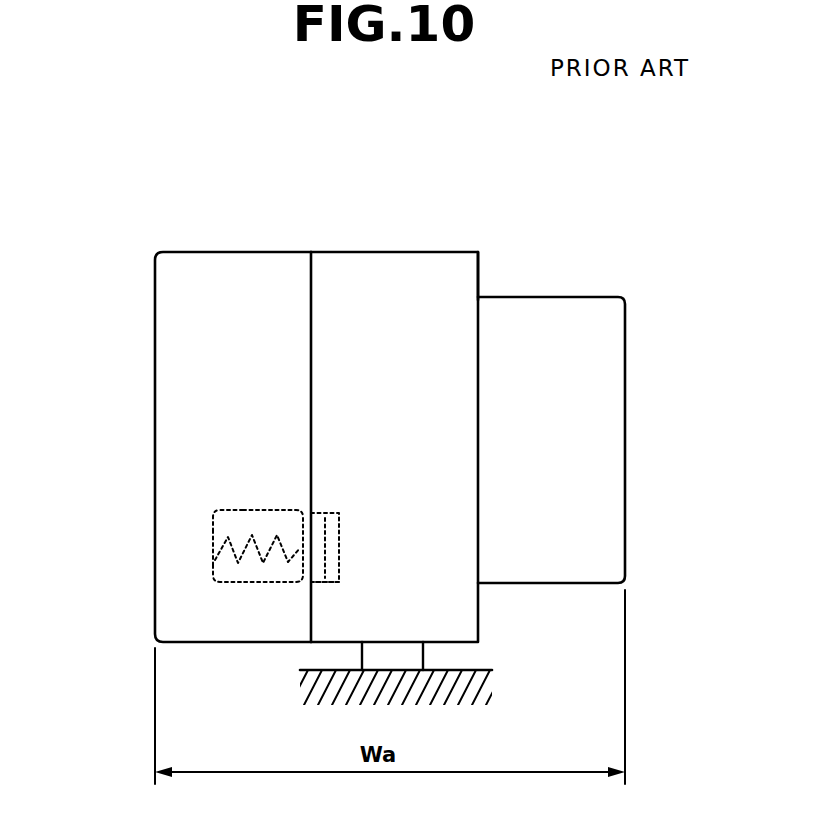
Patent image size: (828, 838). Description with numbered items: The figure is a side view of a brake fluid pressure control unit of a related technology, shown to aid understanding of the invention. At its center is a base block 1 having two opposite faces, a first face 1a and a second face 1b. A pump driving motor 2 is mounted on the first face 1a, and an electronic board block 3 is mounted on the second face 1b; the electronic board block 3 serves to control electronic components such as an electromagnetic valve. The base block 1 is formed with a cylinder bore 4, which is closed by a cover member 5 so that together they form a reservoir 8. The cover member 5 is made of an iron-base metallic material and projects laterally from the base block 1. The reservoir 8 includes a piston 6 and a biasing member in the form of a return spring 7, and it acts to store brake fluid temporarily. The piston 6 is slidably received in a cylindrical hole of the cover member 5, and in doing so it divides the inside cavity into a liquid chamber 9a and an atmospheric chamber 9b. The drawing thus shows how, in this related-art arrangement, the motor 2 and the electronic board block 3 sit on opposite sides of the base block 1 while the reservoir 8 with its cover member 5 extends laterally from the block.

The base block 1 is at (383, 267).
The first face 1a is at (482, 272).
The second face 1b is at (308, 270).
The pump driving motor 2 is at (600, 408).
The electronic board block 3 is at (168, 365).
The cylinder bore 4 is at (335, 585).
The cover member 5 is at (213, 583).
The piston 6 is at (303, 508).
The return spring 7 is at (212, 551).
The reservoir 8 is at (212, 522).
The liquid chamber 9a is at (340, 518).
The atmospheric chamber 9b is at (243, 508).